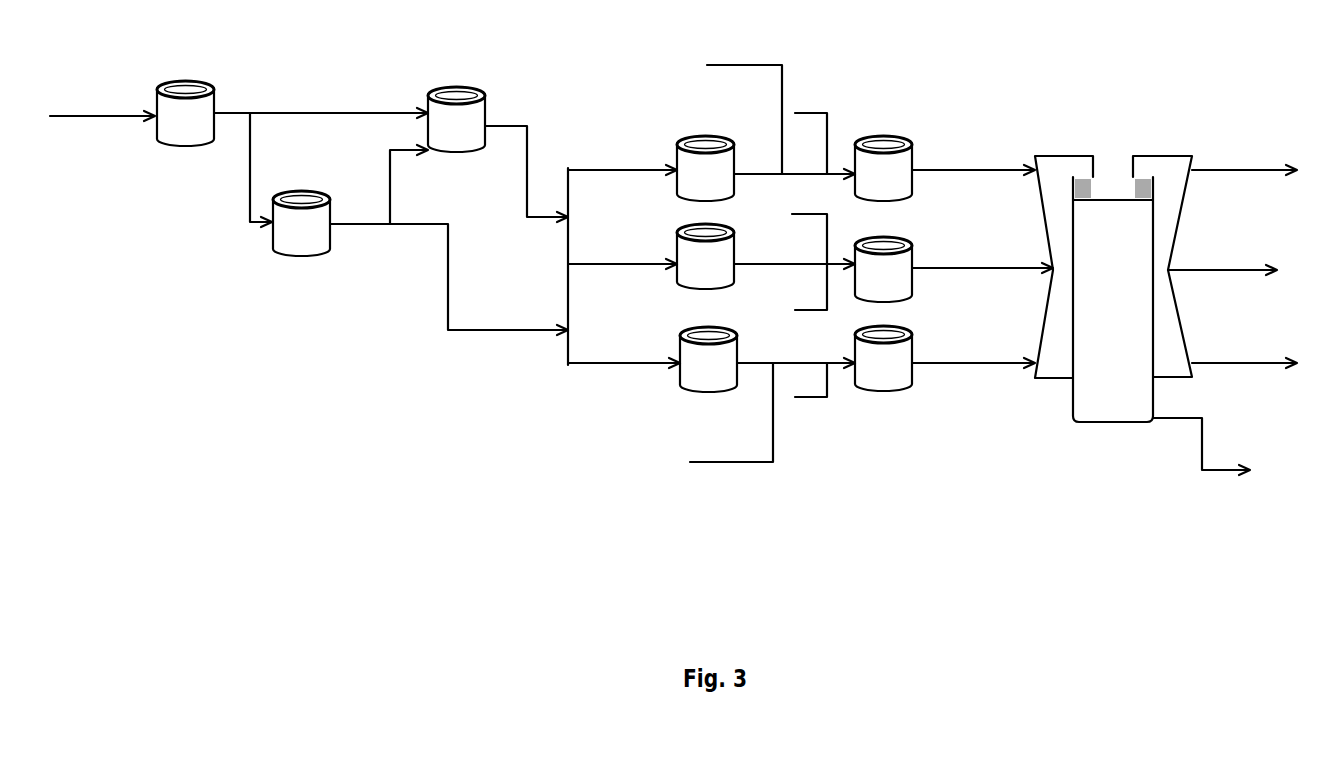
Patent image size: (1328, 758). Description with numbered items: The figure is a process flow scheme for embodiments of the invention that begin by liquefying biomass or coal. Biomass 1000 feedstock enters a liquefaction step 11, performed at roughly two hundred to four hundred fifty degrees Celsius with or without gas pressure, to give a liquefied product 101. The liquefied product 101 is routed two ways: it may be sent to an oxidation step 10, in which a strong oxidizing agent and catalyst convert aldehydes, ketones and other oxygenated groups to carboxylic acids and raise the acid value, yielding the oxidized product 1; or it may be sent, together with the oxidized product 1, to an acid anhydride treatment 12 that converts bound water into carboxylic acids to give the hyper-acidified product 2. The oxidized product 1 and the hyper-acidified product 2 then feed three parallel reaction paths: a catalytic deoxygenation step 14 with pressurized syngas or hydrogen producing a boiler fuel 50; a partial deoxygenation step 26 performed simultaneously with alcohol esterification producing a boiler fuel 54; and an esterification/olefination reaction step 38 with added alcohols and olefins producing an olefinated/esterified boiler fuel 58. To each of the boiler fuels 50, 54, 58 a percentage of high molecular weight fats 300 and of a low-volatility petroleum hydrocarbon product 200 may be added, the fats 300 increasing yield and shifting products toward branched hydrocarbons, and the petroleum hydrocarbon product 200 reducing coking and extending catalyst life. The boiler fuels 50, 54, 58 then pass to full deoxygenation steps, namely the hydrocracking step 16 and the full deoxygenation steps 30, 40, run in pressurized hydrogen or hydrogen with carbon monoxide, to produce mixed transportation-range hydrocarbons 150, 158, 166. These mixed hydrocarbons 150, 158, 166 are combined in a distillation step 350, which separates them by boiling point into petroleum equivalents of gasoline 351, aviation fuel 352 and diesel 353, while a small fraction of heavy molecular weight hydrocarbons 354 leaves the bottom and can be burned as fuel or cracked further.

The biomass 1000 is at (131, 114).
The liquefaction step 11 is at (185, 113).
The liquefied product 101 is at (230, 115).
The oxidation step 10 is at (301, 223).
The oxidized product 1 is at (356, 222).
The acid anhydride treatment 12 is at (456, 119).
The hyper-acidified product 2 is at (510, 118).
The catalytic deoxygenation step 14 is at (705, 168).
The partial deoxygenation step 26 is at (705, 256).
The esterification/olefination reaction step 38 is at (708, 359).
The boiler fuel 50 is at (766, 170).
The boiler fuel 54 is at (768, 262).
The olefinated/esterified boiler fuel 58 is at (768, 362).
The high molecular weight fats 300 is at (752, 65).
The petroleum hydrocarbon product 200 is at (817, 113).
The hydrocracking step 16 is at (883, 168).
The full deoxygenation step 30 is at (883, 269).
The full deoxygenation step 40 is at (883, 358).
The mixed hydrocarbons 150 is at (940, 168).
The transportation fuel 158 is at (975, 268).
The transportation fuel 166 is at (945, 361).
The distillation step 350 is at (1113, 289).
The gasoline 351 is at (1210, 168).
The aviation fuel 352 is at (1210, 268).
The diesel 353 is at (1212, 362).
The heavy molecular weight hydrocarbons 354 is at (1215, 470).